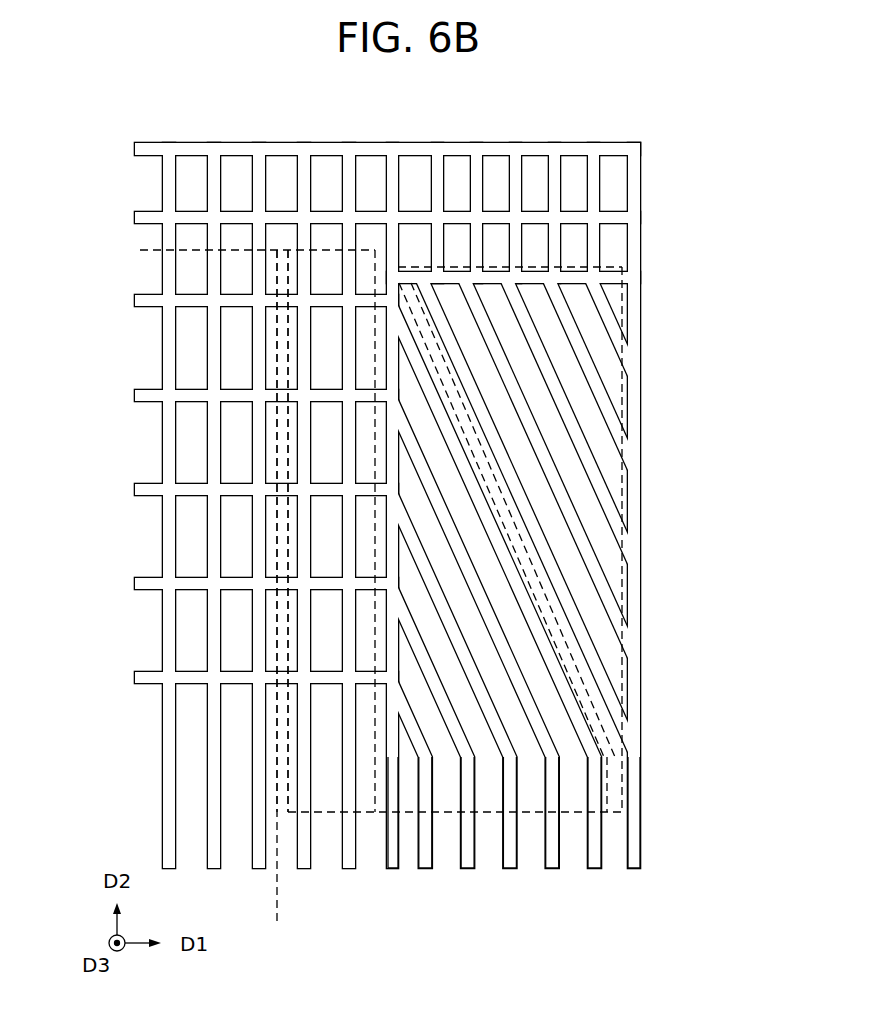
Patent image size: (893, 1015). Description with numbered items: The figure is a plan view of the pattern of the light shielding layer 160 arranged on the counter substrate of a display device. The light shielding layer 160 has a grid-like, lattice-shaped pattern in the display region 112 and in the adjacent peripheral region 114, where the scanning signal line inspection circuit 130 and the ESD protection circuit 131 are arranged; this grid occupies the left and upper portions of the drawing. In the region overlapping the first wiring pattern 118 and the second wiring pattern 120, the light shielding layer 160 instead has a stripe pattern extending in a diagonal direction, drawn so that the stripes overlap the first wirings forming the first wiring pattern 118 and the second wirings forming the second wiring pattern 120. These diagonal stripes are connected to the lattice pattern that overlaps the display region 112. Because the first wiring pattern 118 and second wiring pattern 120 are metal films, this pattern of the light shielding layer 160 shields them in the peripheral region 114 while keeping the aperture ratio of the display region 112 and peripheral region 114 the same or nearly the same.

The display region 112 is at (158, 268).
The peripheral region 114 is at (277, 913).
The first wiring pattern 118 is at (392, 832).
The second wiring pattern 120 is at (640, 290).
The scanning signal line inspection circuit 130 is at (285, 343).
The ESD protection circuit 131 is at (451, 531).
The light shielding layer 160 is at (640, 185).